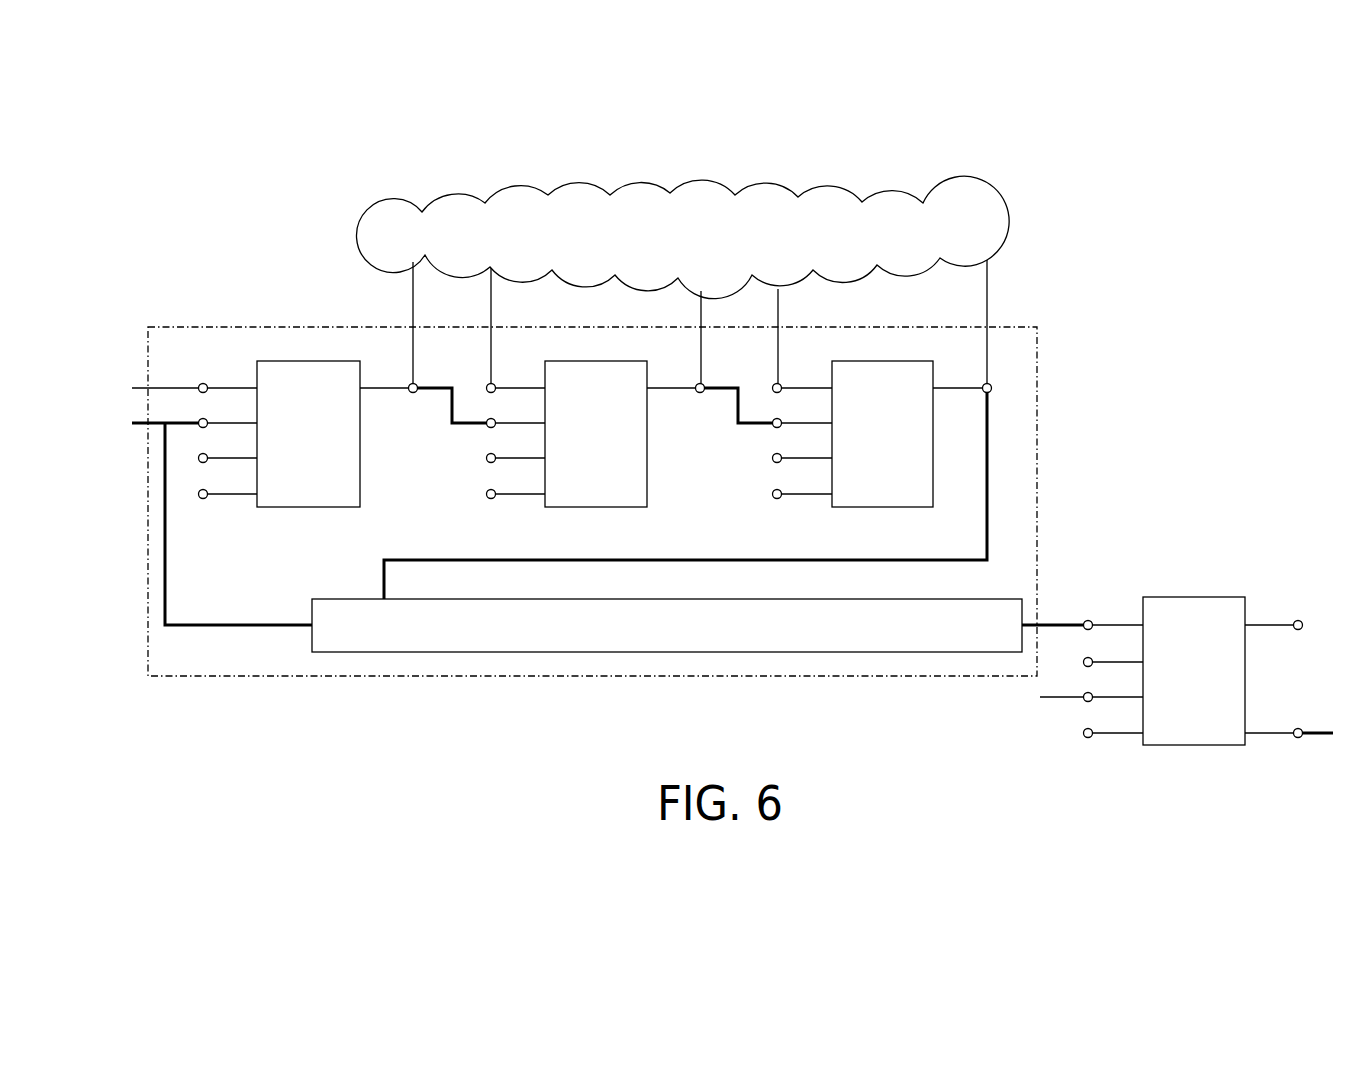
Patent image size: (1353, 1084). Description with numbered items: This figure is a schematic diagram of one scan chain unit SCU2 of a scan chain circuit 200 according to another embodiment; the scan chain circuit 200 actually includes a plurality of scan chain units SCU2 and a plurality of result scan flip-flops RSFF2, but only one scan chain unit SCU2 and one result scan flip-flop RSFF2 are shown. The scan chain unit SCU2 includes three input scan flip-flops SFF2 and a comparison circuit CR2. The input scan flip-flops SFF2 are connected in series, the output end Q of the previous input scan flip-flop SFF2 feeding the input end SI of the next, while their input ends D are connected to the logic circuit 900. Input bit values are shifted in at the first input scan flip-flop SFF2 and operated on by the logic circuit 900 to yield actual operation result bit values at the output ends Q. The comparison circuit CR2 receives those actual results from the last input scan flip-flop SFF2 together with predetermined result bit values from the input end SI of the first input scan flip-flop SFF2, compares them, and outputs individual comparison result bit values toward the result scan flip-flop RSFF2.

The logic circuit 900 is at (759, 247).
The scan chain circuit 200 is at (1271, 450).
The scan chain unit SCU2 is at (1037, 462).
The input scan flip-flop SFF2 is at (282, 459).
The comparison circuit CR2 is at (795, 637).
The result scan flip-flop RSFF2 is at (1162, 597).